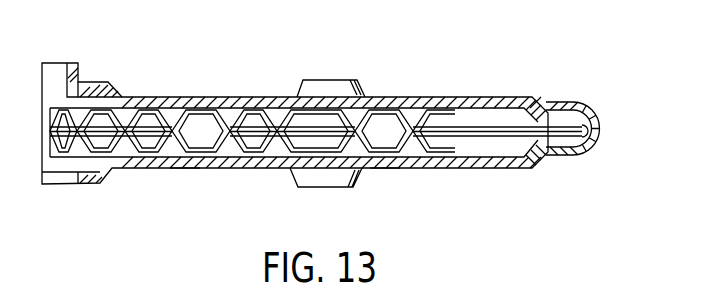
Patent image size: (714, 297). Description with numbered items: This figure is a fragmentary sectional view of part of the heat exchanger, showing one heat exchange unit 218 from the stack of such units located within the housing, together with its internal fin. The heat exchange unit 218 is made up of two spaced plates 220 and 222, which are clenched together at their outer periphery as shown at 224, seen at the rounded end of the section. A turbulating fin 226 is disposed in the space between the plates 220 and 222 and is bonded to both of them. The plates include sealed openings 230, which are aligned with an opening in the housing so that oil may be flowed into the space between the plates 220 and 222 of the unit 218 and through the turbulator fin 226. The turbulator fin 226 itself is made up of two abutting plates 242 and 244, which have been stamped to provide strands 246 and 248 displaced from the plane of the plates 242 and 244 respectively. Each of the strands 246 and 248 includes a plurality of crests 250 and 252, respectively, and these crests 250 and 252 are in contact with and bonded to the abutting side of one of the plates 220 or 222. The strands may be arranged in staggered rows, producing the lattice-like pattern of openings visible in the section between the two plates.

The heat exchange unit 218 is at (497, 93).
The plate 220 is at (436, 94).
The plate 222 is at (436, 172).
The clenched outer periphery 224 is at (602, 122).
The turbulating fin 226 is at (287, 123).
The sealed openings 230 is at (65, 78).
The abutting plate 242 is at (290, 168).
The abutting plate 244 is at (240, 122).
The strands 246 is at (388, 163).
The strands 248 is at (385, 117).
The crests 250 is at (188, 163).
The crests 252 is at (182, 100).